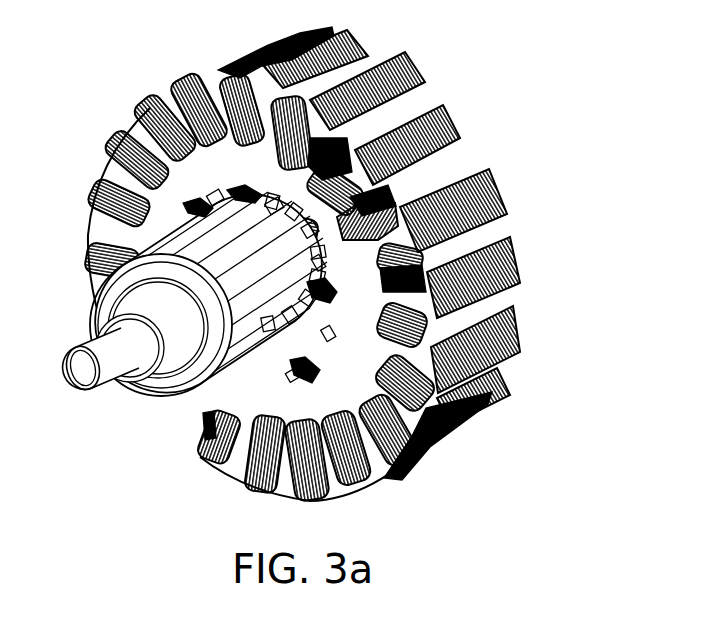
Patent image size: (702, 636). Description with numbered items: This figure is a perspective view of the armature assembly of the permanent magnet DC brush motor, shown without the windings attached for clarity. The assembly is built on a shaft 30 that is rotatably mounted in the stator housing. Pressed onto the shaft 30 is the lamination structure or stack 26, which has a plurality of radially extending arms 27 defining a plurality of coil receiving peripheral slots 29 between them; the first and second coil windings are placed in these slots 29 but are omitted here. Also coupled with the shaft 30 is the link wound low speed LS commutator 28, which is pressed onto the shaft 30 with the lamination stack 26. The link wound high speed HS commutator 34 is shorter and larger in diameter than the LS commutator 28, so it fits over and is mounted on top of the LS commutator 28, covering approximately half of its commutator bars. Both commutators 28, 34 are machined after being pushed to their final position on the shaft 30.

The lamination structure or stack 26 is at (406, 88).
The radially extending arms 27 is at (180, 87).
The LS commutator 28 is at (132, 388).
The coil receiving peripheral slots 29 is at (466, 160).
The shaft 30 is at (80, 380).
The HS commutator 34 is at (201, 445).